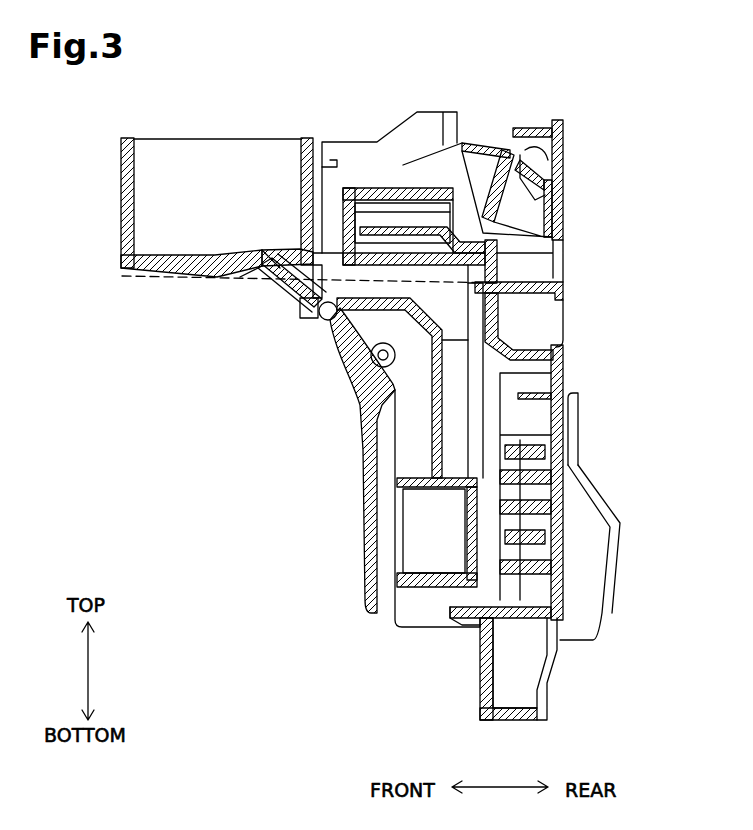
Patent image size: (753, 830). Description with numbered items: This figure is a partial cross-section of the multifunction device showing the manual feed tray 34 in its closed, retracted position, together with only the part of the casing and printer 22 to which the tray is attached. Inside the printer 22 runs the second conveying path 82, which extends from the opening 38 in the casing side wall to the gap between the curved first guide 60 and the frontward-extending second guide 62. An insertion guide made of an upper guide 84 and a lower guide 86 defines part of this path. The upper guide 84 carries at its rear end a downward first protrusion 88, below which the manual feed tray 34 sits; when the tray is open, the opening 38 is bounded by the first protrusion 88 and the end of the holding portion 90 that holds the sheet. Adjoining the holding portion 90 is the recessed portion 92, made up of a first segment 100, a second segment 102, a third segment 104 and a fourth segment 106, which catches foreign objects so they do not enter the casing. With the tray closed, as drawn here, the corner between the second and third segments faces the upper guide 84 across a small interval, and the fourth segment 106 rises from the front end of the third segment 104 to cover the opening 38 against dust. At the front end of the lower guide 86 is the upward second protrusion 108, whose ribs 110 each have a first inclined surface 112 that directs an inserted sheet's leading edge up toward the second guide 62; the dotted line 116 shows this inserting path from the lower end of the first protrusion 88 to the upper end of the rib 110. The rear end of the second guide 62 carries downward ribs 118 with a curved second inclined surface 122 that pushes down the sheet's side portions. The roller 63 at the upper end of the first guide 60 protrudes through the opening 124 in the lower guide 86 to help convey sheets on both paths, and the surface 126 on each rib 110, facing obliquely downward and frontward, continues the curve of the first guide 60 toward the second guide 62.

The printer 22 is at (196, 500).
The manual feed tray 34 is at (625, 490).
The opening 38 is at (573, 297).
The first guide 60 is at (365, 566).
The second guide 62 is at (178, 254).
The roller 63 is at (320, 319).
The second conveying path 82 is at (462, 275).
The upper guide 84 is at (411, 240).
The lower guide 86 is at (354, 352).
The first protrusion 88 is at (563, 278).
The holding portion 90 is at (560, 590).
The recessed portion 92 is at (548, 332).
The first segment 100 is at (553, 378).
The second segment 102 is at (572, 403).
The third segment 104 is at (497, 350).
The fourth segment 106 is at (431, 400).
The second protrusion 108 is at (292, 283).
The rib 110 is at (315, 285).
The first inclined surface 112 is at (308, 303).
The dotted line 116 is at (185, 275).
The rib 118 is at (283, 255).
The second inclined surface 122 is at (218, 257).
The opening 124 is at (330, 290).
The surface 126 is at (300, 268).